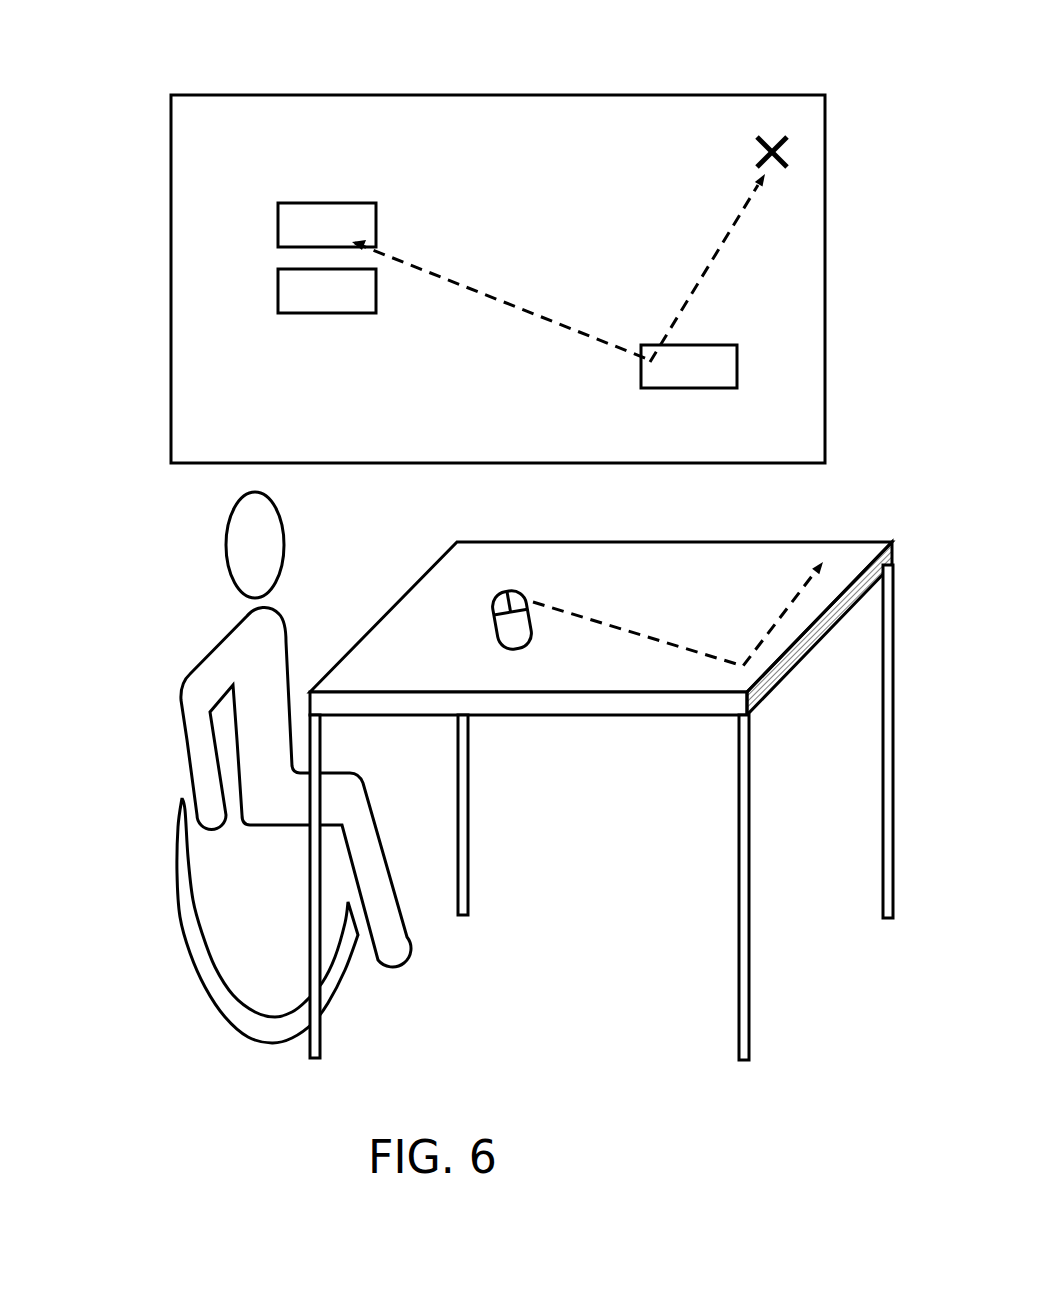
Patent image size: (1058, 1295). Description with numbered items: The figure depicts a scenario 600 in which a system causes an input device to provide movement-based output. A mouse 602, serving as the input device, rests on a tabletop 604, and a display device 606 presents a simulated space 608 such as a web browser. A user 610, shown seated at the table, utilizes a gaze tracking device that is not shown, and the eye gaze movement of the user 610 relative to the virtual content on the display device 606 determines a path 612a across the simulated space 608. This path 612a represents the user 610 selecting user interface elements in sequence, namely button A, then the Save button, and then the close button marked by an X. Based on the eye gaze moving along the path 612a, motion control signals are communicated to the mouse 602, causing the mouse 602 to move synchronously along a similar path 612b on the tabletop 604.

The scenario 600 is at (777, 60).
The mouse 602 is at (522, 640).
The tabletop 604 is at (400, 682).
The display device 606 is at (160, 122).
The simulated space 608 is at (230, 146).
The user 610 is at (192, 670).
The path 612a is at (488, 290).
The similar path 612b is at (613, 627).